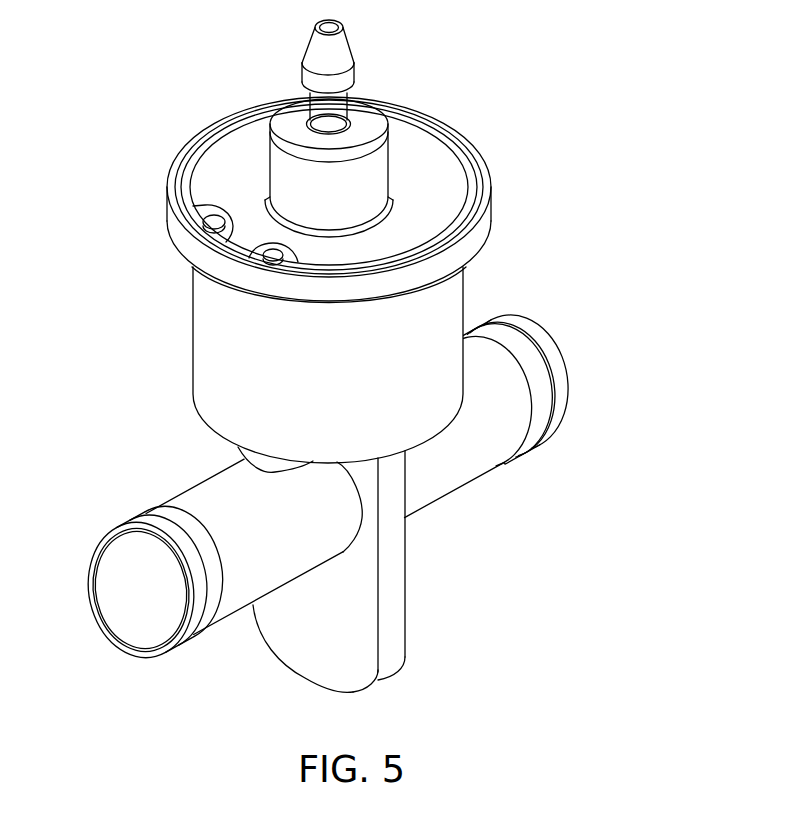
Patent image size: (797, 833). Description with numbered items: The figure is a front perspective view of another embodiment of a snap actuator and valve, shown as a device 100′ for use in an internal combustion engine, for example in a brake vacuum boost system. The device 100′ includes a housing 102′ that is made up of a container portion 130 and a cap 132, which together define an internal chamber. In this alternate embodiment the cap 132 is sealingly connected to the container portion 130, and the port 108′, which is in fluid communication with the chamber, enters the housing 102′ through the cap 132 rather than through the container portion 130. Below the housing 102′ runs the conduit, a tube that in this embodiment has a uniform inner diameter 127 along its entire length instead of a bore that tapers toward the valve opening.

The device 100′ is at (514, 107).
The housing 102′ is at (509, 174).
The port 108′ is at (307, 50).
The uniform inner diameter 127 is at (130, 595).
The container portion 130 is at (193, 331).
The cap 132 is at (255, 194).